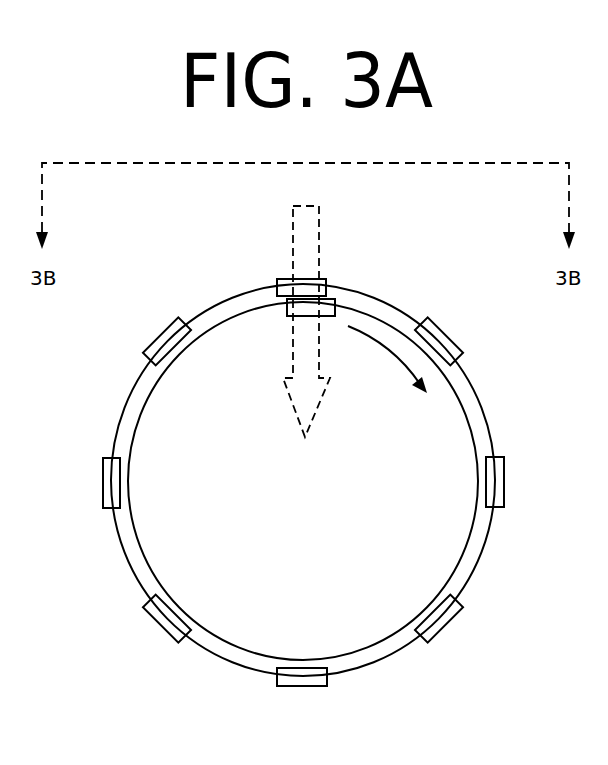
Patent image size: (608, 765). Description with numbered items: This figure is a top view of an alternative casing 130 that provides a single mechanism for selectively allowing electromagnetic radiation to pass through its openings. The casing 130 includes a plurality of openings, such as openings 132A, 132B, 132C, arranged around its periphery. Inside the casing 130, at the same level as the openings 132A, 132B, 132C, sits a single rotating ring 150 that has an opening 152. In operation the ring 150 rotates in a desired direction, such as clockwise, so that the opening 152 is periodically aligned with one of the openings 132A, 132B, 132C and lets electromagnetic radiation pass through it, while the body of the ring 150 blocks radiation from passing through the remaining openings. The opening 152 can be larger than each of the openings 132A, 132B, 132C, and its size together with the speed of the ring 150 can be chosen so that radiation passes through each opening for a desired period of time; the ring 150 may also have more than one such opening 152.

The casing 130 is at (384, 300).
The rotating ring 150 is at (472, 541).
The opening 152 is at (322, 317).
The opening 132A is at (447, 341).
The opening 132B is at (283, 280).
The opening 132C is at (167, 330).